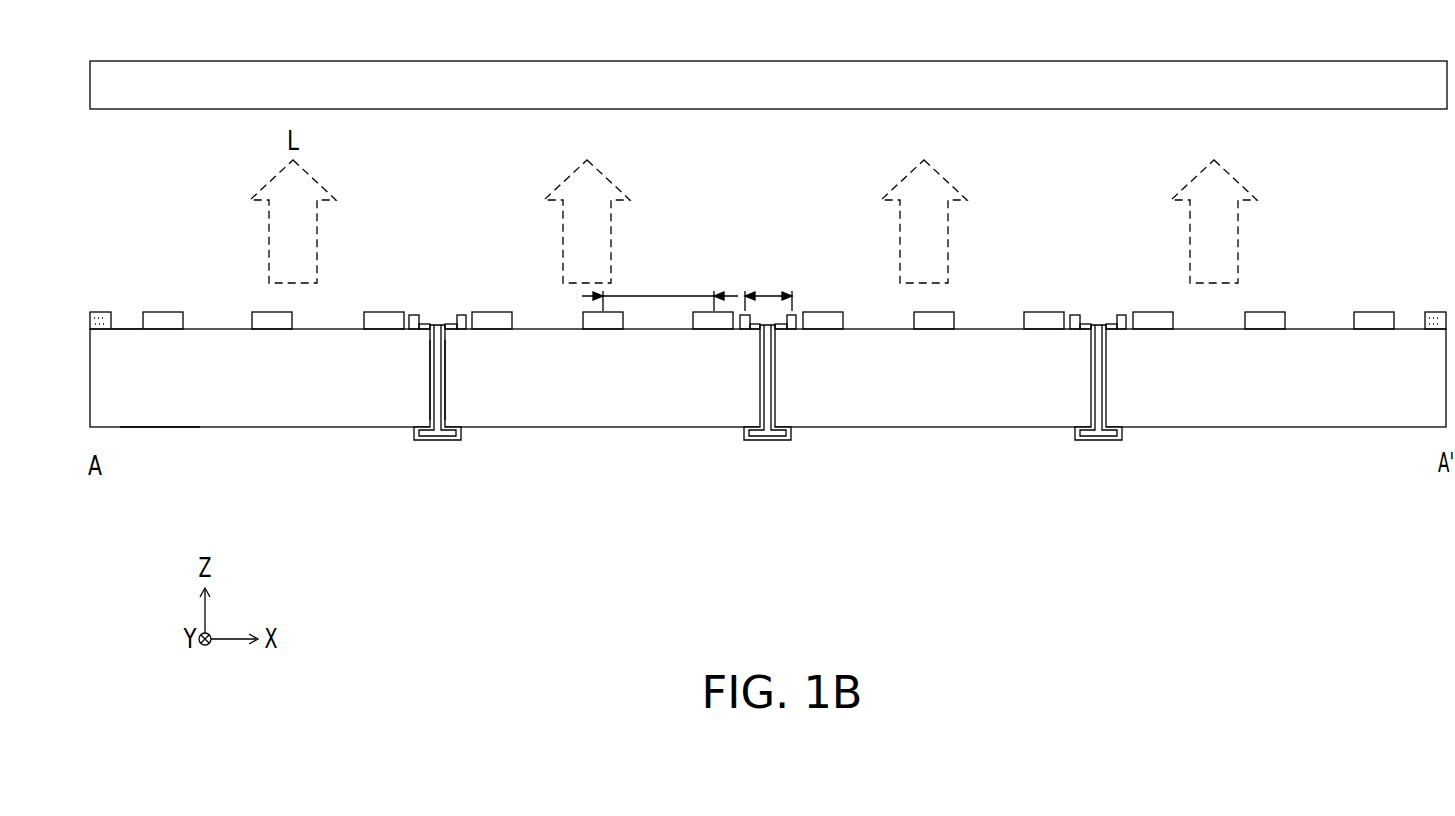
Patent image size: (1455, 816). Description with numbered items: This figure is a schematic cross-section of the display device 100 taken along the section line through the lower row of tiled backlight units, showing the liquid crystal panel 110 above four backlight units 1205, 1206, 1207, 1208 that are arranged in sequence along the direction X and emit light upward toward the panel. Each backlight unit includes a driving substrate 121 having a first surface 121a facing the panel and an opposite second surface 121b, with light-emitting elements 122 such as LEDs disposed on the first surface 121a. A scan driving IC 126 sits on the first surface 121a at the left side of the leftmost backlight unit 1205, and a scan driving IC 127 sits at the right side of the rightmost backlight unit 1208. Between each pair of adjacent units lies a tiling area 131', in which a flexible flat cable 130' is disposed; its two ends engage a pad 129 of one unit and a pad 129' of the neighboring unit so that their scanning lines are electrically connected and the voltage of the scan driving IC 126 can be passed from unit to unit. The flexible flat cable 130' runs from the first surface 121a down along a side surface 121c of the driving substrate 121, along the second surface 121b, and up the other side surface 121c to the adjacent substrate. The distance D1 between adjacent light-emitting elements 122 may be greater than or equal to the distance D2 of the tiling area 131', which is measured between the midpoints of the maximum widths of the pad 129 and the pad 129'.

The liquid crystal panel 110 is at (1412, 74).
The display device 100 is at (1444, 519).
The driving substrate 121 is at (356, 410).
The first surface 121a is at (131, 327).
The second surface 121b is at (159, 430).
The side surface 121c is at (441, 377).
The light-emitting element 122 is at (175, 313).
The scan driving IC 126 is at (102, 313).
The scan driving IC 127 is at (1433, 313).
The pad 129 is at (725, 298).
The pad 129' is at (791, 298).
The flexible flat cable 130' is at (753, 284).
The tiling area 131' is at (768, 326).
The backlight unit 1205 is at (303, 445).
The backlight unit 1206 is at (617, 445).
The backlight unit 1207 is at (957, 445).
The backlight unit 1208 is at (1222, 445).
The distance between adjacent light-emitting elements D1 is at (660, 295).
The distance of the tiling area D2 is at (771, 295).